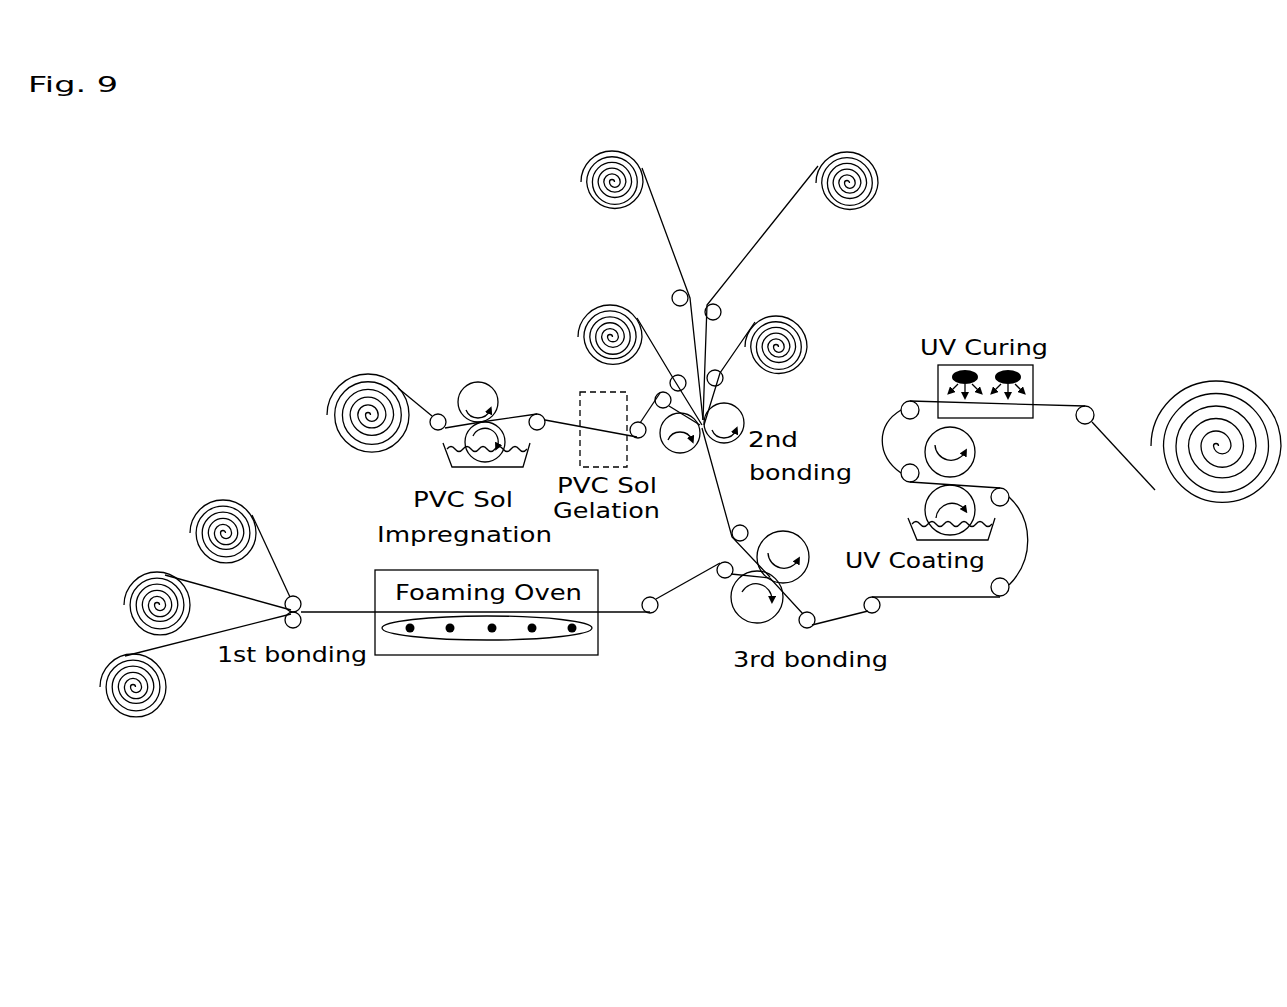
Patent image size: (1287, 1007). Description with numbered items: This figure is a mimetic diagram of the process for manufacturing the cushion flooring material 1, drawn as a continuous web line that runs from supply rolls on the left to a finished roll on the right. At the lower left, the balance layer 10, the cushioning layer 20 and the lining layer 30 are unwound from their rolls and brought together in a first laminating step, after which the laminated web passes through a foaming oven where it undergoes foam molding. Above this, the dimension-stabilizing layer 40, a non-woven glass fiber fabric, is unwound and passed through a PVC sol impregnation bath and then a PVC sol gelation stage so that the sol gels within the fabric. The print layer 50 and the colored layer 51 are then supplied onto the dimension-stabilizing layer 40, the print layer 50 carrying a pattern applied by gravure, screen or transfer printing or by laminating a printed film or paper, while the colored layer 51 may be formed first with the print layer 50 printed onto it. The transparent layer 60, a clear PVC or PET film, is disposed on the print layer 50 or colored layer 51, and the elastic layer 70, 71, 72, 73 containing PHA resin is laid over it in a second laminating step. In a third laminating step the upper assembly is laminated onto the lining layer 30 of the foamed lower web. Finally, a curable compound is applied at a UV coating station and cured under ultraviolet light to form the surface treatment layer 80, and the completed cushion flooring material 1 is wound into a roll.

The cushion flooring material 1 is at (1230, 360).
The balance layer 10 is at (166, 684).
The cushioning layer 20 is at (124, 593).
The lining layer 30 is at (191, 515).
The dimension-stabilizing layer 40 is at (328, 403).
The print layer 50 is at (589, 158).
The colored layer 51 is at (588, 312).
The transparent layer 60 is at (872, 162).
The elastic layer 70 is at (901, 328).
The elastic layer 71 is at (776, 345).
The elastic layer 72 is at (776, 345).
The elastic layer 73 is at (802, 322).
The surface treatment layer 80 is at (1010, 543).